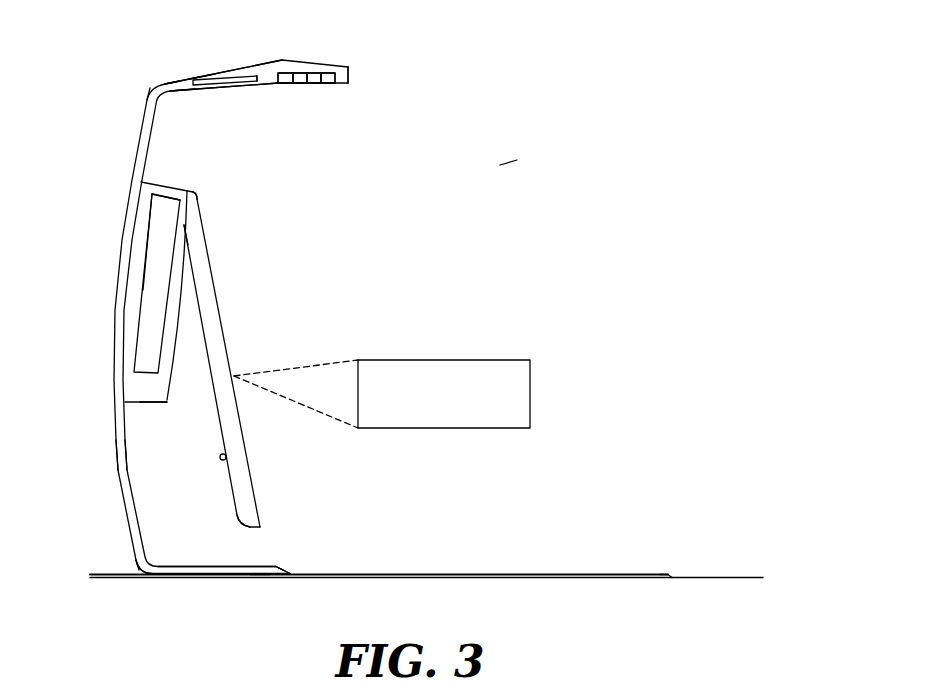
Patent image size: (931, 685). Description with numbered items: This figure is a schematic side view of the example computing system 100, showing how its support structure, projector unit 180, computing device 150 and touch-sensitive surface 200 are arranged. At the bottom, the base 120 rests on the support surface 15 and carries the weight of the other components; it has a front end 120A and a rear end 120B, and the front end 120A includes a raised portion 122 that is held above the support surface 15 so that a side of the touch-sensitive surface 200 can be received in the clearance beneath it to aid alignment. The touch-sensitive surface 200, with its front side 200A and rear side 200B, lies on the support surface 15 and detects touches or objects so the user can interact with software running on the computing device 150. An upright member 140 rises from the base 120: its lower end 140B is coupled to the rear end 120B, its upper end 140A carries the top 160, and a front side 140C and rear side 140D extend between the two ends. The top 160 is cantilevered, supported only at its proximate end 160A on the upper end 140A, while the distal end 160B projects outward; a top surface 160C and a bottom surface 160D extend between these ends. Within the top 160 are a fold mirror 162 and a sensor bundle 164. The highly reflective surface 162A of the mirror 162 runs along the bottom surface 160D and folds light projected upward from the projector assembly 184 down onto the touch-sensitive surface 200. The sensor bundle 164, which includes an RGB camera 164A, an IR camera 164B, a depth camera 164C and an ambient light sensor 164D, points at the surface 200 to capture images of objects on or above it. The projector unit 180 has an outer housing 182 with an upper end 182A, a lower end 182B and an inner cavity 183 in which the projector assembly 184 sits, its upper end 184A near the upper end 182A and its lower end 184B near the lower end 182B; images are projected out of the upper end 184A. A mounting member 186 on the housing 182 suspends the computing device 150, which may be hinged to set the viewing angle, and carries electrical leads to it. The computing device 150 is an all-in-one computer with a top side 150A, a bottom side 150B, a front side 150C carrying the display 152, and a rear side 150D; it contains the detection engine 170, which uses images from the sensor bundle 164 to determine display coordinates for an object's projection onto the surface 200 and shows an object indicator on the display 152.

The support surface 15 is at (707, 576).
The computing system 100 is at (516, 161).
The base 120 is at (243, 565).
The front end 120A is at (291, 571).
The rear end 120B is at (150, 576).
The raised portion 122 is at (283, 566).
The upright member 140 is at (117, 380).
The upper end 140A is at (146, 92).
The lower end 140B is at (139, 566).
The front side 140C is at (132, 484).
The rear side 140D is at (118, 476).
The computing device 150 is at (232, 291).
The top side 150A is at (199, 197).
The bottom side 150B is at (267, 531).
The front side 150C is at (277, 363).
The display 152 is at (227, 344).
The rear side 150D is at (226, 456).
The top 160 is at (229, 36).
The proximate end 160A is at (153, 80).
The distal end 160B is at (353, 70).
The top surface 160C is at (200, 78).
The bottom surface 160D is at (181, 96).
The fold mirror 162 is at (206, 86).
The highly reflective surface 162A is at (246, 86).
The sensor bundle 164 is at (282, 86).
The RGB camera 164A is at (331, 72).
The IR camera 164B is at (316, 72).
The depth camera 164C is at (300, 72).
The ambient light sensor 164D is at (283, 72).
The detection engine 170 is at (446, 428).
The projector unit 180 is at (189, 301).
The outer housing 182 is at (142, 404).
The upper end 182A is at (142, 185).
The lower end 182B is at (153, 403).
The inner cavity 183 is at (142, 229).
The projector assembly 184 is at (143, 274).
The upper end 184A is at (149, 189).
The lower end 184B is at (158, 376).
The mounting member 186 is at (184, 222).
The touch-sensitive surface 200 is at (638, 573).
The front side 200A is at (672, 579).
The rear side 200B is at (259, 576).